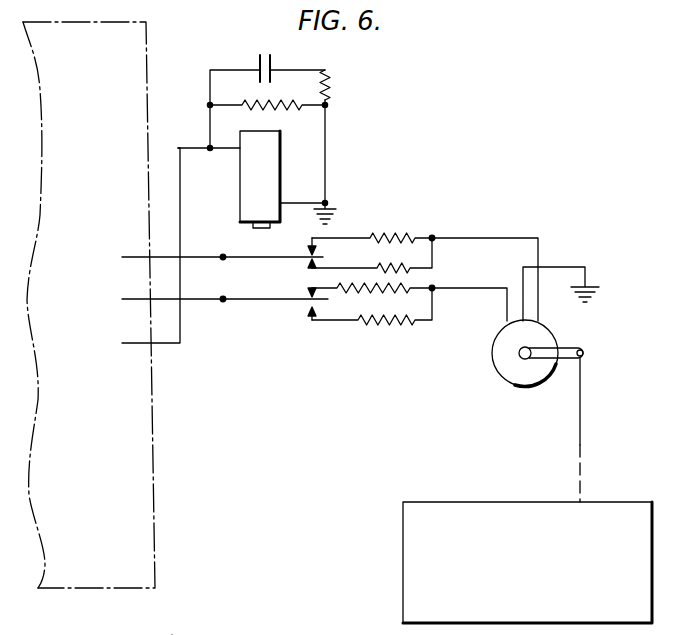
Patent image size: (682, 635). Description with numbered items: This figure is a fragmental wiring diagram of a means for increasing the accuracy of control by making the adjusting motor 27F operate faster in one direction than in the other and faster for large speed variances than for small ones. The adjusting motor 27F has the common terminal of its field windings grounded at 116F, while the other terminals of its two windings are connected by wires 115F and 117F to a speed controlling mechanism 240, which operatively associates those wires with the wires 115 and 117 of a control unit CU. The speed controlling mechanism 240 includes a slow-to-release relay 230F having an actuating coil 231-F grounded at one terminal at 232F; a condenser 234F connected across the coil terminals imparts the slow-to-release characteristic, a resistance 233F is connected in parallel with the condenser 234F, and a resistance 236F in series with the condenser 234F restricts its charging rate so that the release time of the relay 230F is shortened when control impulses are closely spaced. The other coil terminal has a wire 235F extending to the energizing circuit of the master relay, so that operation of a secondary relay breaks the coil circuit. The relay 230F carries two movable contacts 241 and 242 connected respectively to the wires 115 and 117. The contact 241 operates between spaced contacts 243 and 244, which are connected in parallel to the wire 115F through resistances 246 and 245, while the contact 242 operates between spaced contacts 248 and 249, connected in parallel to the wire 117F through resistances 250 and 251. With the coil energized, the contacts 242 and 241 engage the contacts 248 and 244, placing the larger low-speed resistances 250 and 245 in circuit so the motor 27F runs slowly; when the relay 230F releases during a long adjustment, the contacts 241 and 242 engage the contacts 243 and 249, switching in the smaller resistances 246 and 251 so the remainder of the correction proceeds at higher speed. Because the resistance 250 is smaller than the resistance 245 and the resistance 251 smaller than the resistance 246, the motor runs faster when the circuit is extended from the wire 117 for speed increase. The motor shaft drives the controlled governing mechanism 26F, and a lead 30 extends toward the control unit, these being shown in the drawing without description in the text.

The control unit CU is at (157, 493).
The slow-to-release relay 230F is at (287, 136).
The resistance 233F is at (250, 103).
The condenser 234F is at (275, 68).
The resistance 236F is at (334, 87).
The actuating coil 231-F is at (256, 165).
The ground 232F is at (335, 208).
The wire 235F is at (166, 344).
The wire 117 is at (133, 257).
The wire 115 is at (131, 299).
The movable relay contact 242 is at (250, 259).
The movable relay contact 241 is at (252, 301).
The speed controlling mechanism 240 is at (276, 317).
The contact 248 is at (311, 252).
The contact 249 is at (311, 262).
The contact 244 is at (311, 291).
The contact 243 is at (307, 326).
The resistance 250 is at (411, 210).
The resistance 251 is at (400, 263).
The resistance 245 is at (400, 287).
The resistance 246 is at (392, 323).
The wire 117F is at (497, 238).
The wire 115F is at (453, 289).
The ground 116F is at (604, 293).
The adjusting motor 27F is at (502, 379).
The controlled governing mechanism 26F is at (403, 527).
The conductor 30 is at (172, 634).